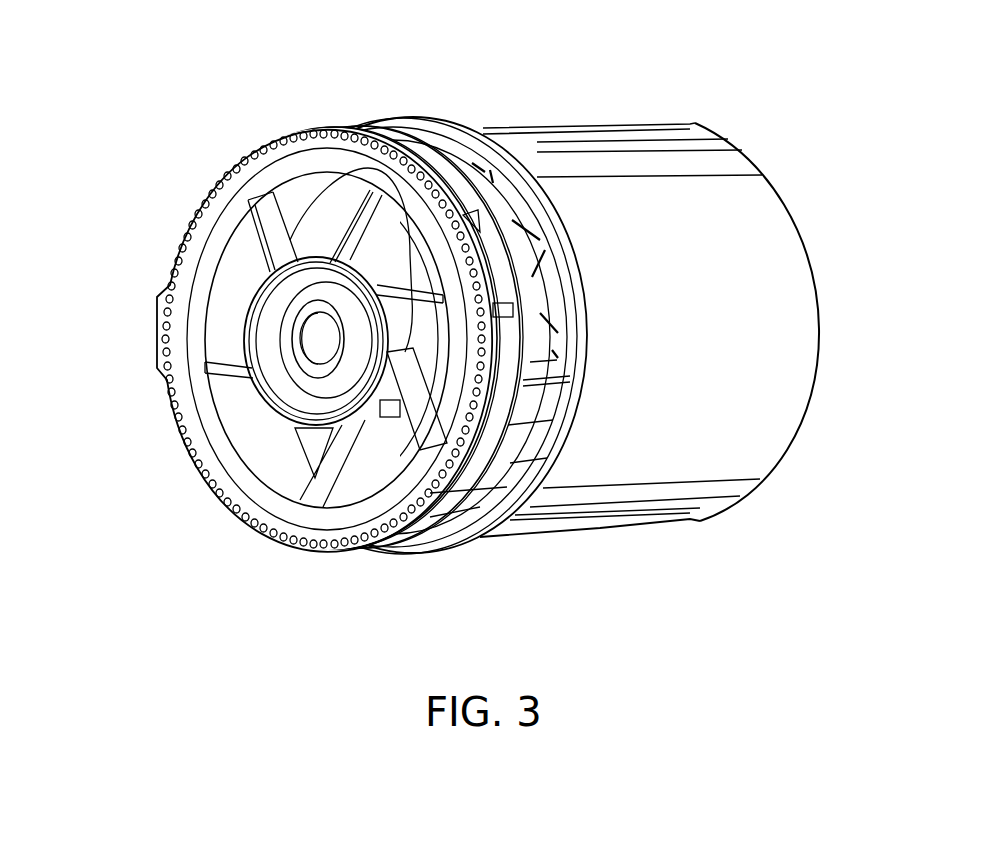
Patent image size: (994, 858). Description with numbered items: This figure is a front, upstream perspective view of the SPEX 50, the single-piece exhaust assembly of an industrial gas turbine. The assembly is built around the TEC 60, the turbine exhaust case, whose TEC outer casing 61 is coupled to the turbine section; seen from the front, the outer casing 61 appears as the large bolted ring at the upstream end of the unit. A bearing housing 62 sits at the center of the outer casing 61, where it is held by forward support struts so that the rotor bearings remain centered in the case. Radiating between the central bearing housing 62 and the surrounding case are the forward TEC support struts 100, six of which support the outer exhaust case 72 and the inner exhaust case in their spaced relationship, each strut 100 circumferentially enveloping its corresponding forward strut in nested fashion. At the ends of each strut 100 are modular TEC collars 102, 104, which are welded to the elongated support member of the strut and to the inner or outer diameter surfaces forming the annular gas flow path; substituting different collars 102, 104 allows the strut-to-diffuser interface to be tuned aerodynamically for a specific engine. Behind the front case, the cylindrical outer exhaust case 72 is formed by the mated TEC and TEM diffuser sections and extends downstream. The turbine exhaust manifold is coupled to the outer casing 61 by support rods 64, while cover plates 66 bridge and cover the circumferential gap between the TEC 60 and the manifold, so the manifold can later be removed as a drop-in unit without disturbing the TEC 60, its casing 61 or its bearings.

The SPEX 50 is at (750, 100).
The TEC 60 is at (152, 398).
The TEC outer casing 61 is at (268, 140).
The bearing housing 62 is at (390, 417).
The support rods 64 is at (515, 215).
The cover plates 66 is at (543, 445).
The outer exhaust case 72 is at (703, 502).
The forward TEC support struts 100 is at (280, 240).
The modular TEC collar 102 is at (225, 360).
The modular TEC collar 104 is at (373, 138).